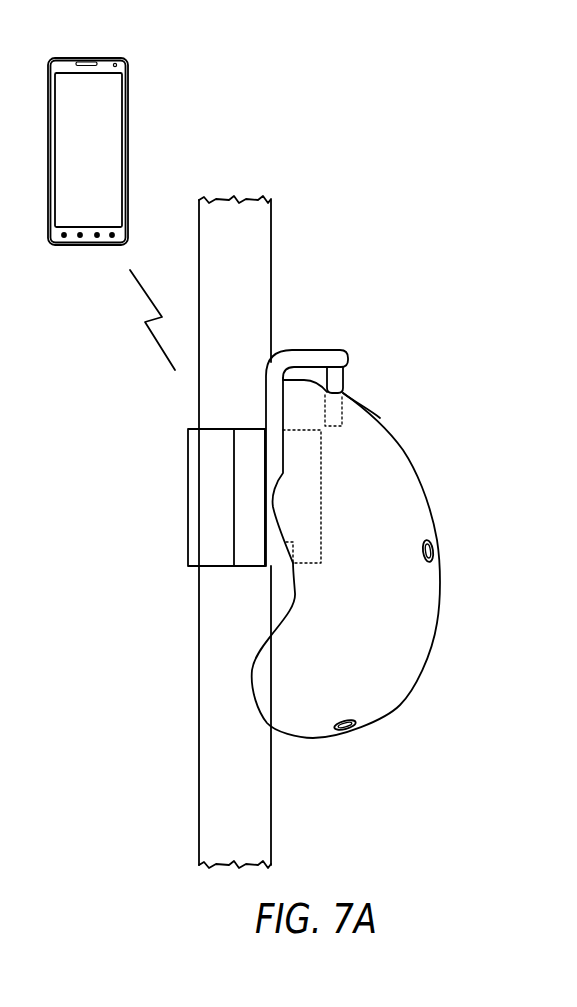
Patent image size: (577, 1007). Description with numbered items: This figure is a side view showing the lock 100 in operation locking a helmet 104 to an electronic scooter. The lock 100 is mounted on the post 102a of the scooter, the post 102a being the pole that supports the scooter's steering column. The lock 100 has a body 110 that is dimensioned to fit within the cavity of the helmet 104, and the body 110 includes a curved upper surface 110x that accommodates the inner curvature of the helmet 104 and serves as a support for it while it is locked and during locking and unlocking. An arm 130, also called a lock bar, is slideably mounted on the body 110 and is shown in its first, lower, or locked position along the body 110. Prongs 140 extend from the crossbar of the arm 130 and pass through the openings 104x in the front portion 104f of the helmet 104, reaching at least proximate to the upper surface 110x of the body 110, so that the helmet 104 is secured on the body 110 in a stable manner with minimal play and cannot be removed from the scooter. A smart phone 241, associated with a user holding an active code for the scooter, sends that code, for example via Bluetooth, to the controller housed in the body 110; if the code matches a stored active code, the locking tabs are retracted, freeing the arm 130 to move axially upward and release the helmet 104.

The smart phone 241 is at (108, 161).
The lock 100 is at (213, 420).
The body 110 is at (250, 413).
The arm 130 is at (306, 393).
The front portion of the helmet 104f is at (318, 340).
The prongs 140 is at (343, 390).
The openings 104x is at (343, 393).
The curved upper surface 110x is at (303, 428).
The helmet 104 is at (369, 643).
The post 102a is at (261, 800).